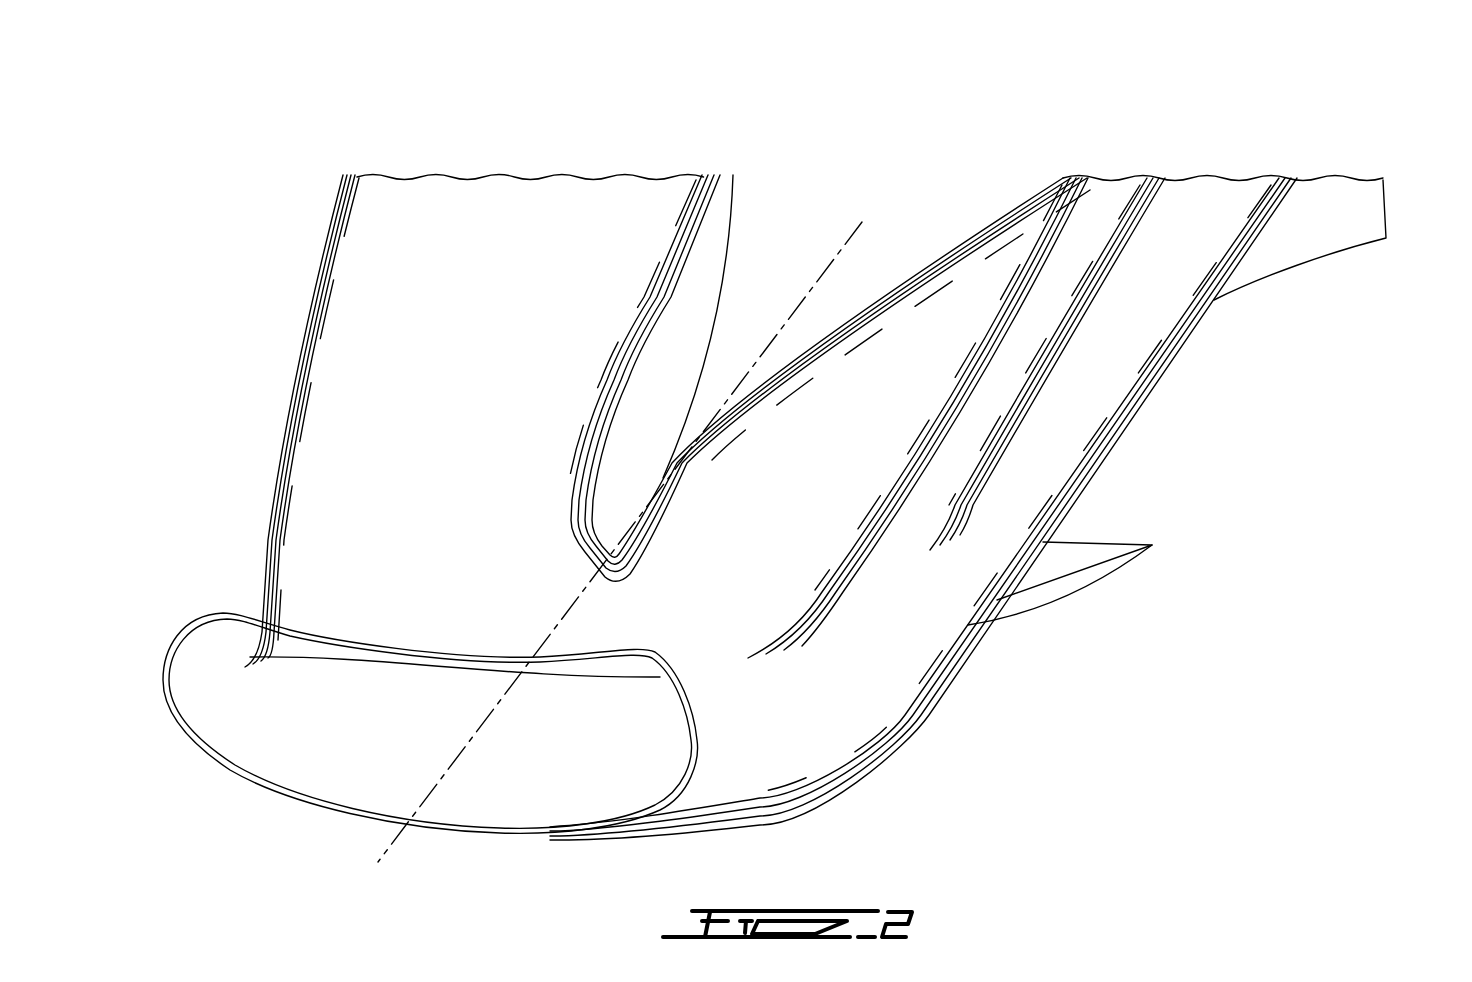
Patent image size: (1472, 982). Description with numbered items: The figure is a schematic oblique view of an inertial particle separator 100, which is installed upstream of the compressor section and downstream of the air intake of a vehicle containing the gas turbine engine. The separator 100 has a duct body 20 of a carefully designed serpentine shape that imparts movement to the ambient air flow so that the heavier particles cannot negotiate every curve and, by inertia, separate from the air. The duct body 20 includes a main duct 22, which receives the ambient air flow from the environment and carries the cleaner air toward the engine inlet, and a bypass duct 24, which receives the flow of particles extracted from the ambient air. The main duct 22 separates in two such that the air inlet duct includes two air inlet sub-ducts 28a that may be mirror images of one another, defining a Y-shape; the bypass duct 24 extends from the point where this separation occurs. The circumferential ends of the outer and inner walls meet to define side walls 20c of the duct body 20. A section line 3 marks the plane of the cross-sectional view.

The inertial particle separator 100 is at (1375, 138).
The duct body 20 is at (1140, 342).
The side walls 20c is at (158, 652).
The main duct 22 is at (290, 247).
The bypass duct 24 is at (1085, 605).
The air inlet sub-ducts 28a is at (537, 155).
The section line 3- 3 is at (838, 216).